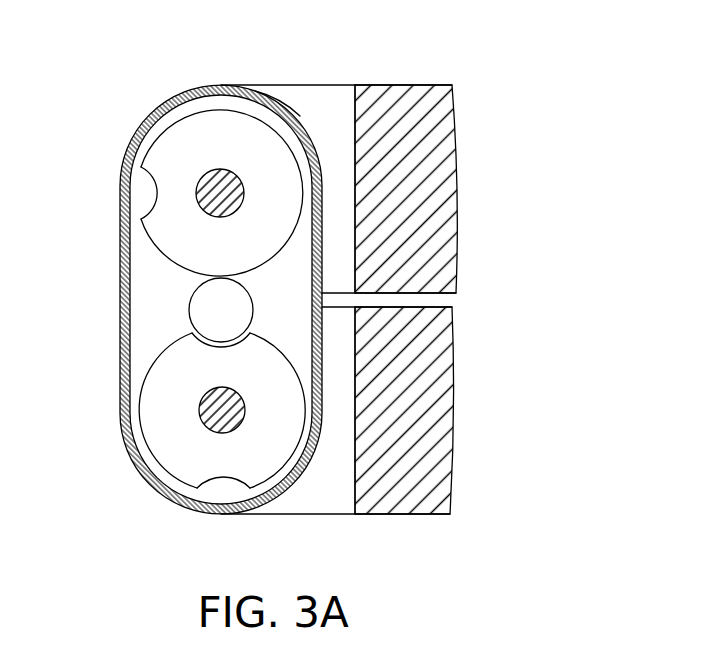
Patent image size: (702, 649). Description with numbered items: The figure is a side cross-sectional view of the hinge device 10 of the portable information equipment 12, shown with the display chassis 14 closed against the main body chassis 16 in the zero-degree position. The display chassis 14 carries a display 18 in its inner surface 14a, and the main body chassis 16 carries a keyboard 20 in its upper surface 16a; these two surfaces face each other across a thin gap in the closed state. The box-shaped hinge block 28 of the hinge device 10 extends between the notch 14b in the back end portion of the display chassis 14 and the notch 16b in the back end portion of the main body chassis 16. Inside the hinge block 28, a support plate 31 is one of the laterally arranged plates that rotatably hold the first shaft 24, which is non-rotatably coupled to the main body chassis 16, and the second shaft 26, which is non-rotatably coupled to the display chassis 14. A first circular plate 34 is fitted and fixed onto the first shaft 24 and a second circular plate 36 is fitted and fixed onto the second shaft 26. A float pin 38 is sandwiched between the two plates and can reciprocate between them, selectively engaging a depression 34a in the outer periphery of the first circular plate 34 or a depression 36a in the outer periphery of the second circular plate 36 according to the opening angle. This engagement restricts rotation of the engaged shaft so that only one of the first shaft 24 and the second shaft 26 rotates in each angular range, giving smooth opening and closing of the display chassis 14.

The portable information equipment 12 is at (92, 29).
The hinge device 10 is at (189, 66).
The support plate 31 is at (155, 267).
The hinge block 28 is at (282, 108).
The second circular plate 36 is at (173, 133).
The depression 36a is at (157, 192).
The second shaft 26 is at (219, 168).
The float pin 38 is at (215, 305).
The first circular plate 34 is at (157, 397).
The depression 34a is at (223, 341).
The first shaft 24 is at (222, 433).
The display chassis 14 is at (399, 85).
The notch 14b is at (330, 108).
The main body chassis 16 is at (403, 515).
The notch 16b is at (322, 493).
The upper surface 16a is at (465, 278).
The keyboard 20 is at (388, 300).
The inner surface 14a is at (465, 335).
The display 18 is at (408, 298).